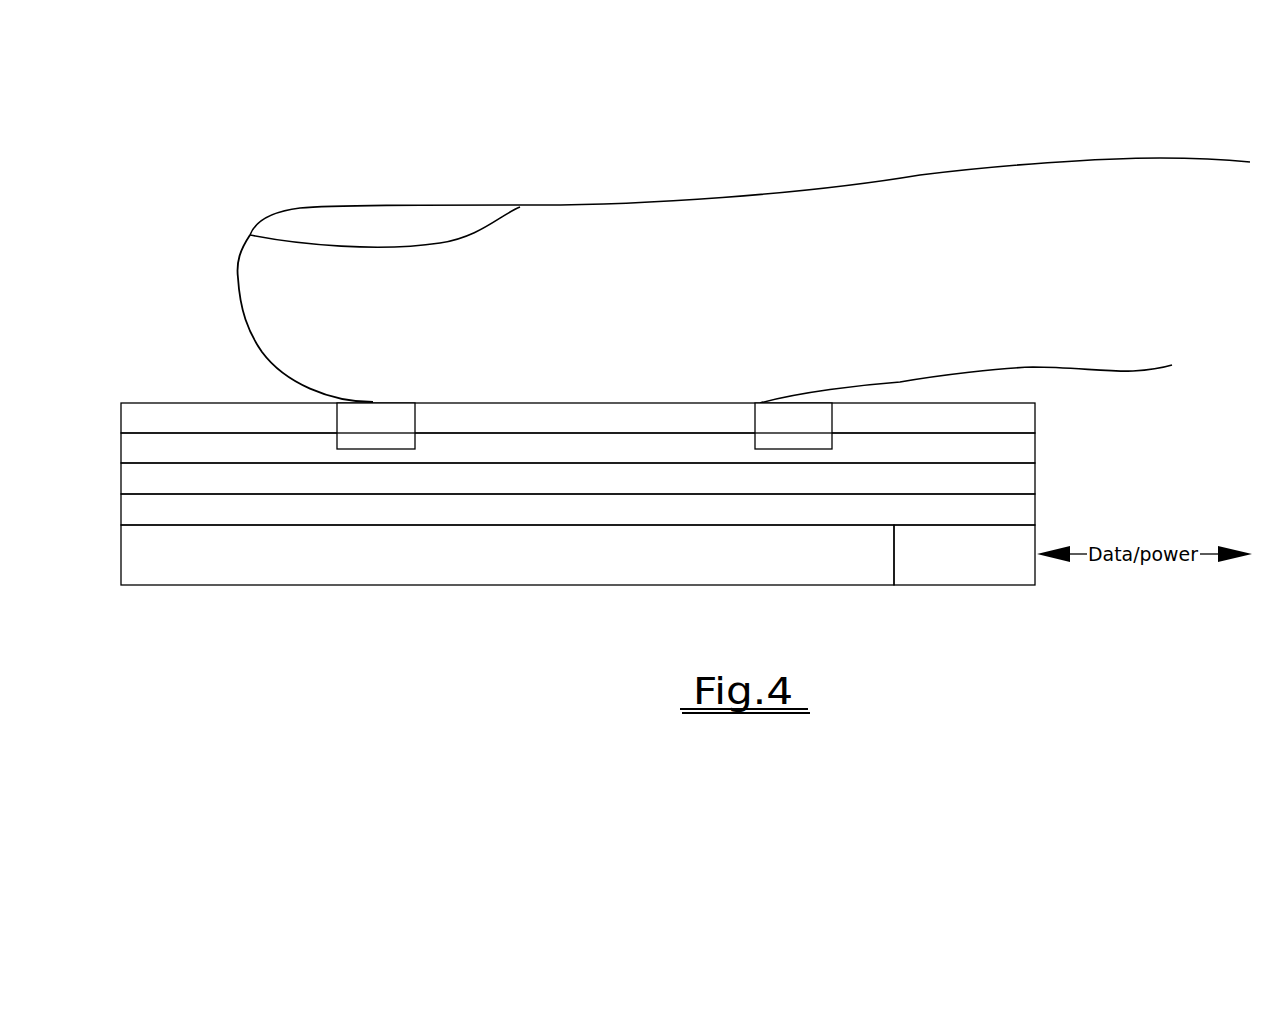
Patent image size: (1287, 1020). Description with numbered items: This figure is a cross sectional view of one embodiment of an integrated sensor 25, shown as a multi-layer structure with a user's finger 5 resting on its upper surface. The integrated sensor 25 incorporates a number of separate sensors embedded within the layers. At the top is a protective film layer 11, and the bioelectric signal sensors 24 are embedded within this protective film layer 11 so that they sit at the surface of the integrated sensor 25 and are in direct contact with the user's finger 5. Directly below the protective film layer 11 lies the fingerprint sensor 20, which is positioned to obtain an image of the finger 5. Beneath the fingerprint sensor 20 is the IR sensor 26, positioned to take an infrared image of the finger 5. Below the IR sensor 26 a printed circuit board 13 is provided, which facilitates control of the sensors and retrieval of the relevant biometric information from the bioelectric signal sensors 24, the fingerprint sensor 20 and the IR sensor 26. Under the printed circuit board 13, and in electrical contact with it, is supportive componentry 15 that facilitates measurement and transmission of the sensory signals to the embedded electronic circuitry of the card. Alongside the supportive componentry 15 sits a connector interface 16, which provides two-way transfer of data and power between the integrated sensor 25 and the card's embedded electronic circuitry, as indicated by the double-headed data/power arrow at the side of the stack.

The finger 5 is at (740, 269).
The integrated sensor 25 is at (197, 340).
The protective film layer 11 is at (222, 430).
The bioelectric signal sensors 24 is at (385, 442).
The fingerprint sensor 20 is at (630, 461).
The IR sensor 26 is at (575, 490).
The printed circuit board 13 is at (577, 520).
The supportive componentry 15 is at (557, 571).
The connector interface 16 is at (970, 569).